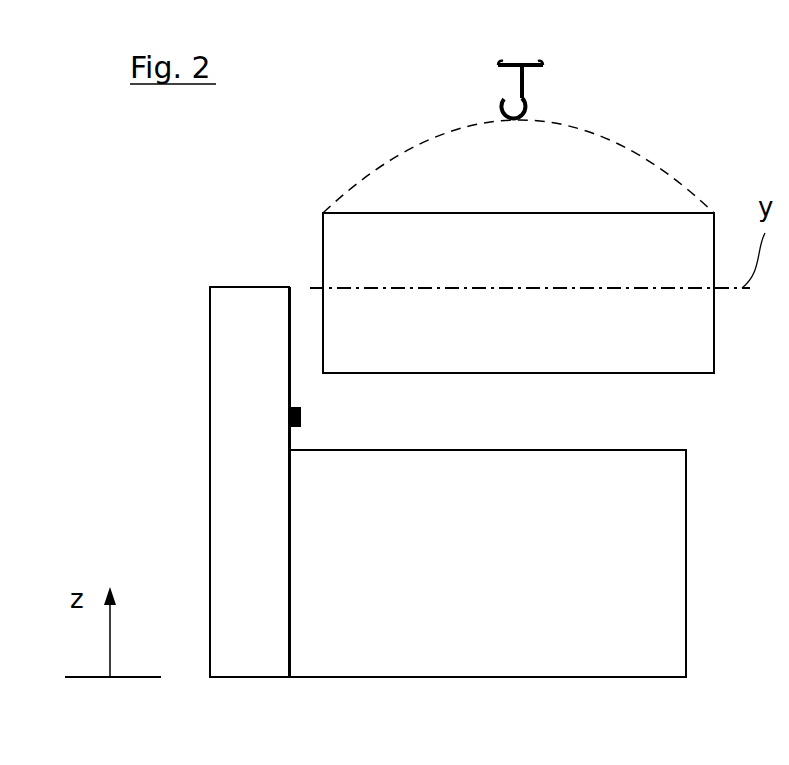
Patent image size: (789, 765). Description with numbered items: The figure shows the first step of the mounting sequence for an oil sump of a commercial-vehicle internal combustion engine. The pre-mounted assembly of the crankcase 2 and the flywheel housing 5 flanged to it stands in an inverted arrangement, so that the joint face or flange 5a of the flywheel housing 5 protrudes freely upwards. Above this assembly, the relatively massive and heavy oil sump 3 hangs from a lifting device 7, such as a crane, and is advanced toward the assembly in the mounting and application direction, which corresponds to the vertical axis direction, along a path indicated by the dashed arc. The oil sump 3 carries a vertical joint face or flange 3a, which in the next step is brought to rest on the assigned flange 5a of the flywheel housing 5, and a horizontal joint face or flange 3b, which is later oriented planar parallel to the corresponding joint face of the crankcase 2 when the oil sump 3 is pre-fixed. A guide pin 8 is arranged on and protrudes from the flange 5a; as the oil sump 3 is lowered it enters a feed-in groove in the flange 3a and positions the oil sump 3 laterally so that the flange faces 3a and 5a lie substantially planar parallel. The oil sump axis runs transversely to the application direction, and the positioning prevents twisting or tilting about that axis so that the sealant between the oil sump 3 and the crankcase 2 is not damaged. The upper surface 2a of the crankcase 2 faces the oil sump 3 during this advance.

The crankcase 2 is at (575, 578).
The upper surface of base body 2a is at (418, 450).
The oil sump 3 is at (584, 266).
The vertical joint face or flange 3a is at (321, 243).
The horizontal joint face or flange 3b is at (541, 373).
The flywheel housing 5 is at (259, 368).
The joint face or flange 5a is at (292, 319).
The lifting device 7 is at (537, 102).
The guide pin 8 is at (301, 418).